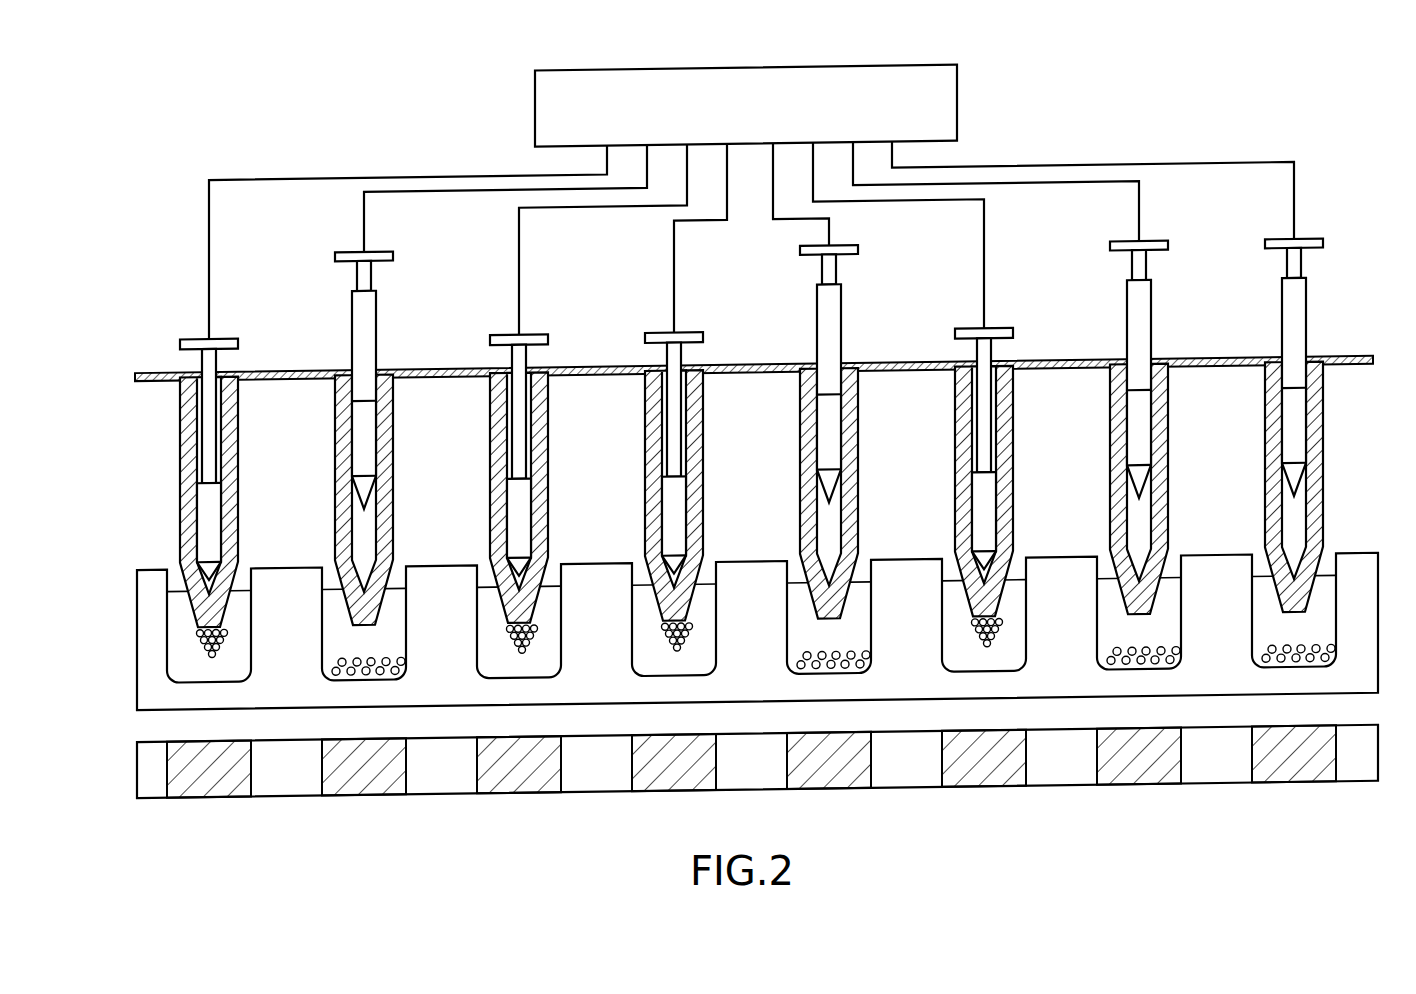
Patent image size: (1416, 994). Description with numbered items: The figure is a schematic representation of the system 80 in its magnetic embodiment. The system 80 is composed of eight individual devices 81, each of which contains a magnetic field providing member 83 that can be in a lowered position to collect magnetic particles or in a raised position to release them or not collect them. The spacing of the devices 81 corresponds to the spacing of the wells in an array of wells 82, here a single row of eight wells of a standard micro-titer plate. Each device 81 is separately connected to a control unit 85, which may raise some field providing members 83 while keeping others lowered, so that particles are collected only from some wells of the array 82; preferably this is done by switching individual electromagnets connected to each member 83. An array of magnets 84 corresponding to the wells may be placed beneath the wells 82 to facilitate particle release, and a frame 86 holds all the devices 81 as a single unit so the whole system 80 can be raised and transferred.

The system 80 is at (1258, 131).
The individual device 81 is at (780, 494).
The array of wells 82 is at (141, 556).
The magnetic field providing member 83 is at (213, 520).
The array of magnets 84 is at (265, 827).
The control unit 85 is at (546, 110).
The frame 86 is at (1348, 375).